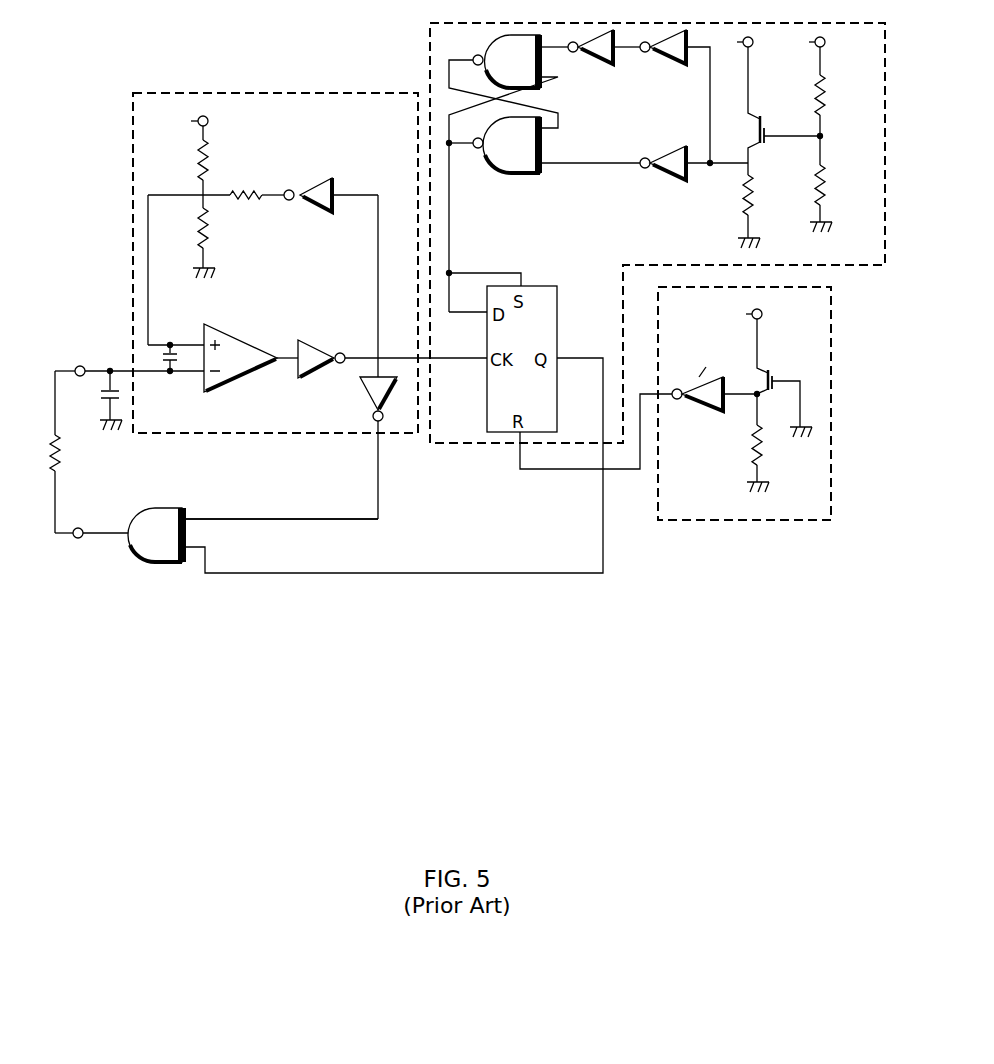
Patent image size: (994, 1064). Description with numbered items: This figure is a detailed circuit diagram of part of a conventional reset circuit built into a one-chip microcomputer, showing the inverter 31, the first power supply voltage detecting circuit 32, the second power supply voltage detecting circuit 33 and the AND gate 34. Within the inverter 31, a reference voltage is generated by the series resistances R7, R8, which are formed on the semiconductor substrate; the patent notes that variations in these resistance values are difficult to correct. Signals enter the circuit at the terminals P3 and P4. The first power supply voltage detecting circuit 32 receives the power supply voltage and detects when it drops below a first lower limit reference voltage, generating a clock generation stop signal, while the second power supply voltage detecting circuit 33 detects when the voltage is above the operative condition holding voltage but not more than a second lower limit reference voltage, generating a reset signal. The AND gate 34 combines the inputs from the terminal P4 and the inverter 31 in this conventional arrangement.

The inverter 31 is at (276, 306).
The first power supply voltage detecting circuit 32 is at (885, 103).
The second power supply voltage detecting circuit 33 is at (831, 404).
The AND gate 34 is at (163, 522).
The input terminal P3 is at (81, 365).
The input terminal P4 is at (79, 527).
The resistance R7 is at (208, 163).
The resistance R8 is at (208, 245).